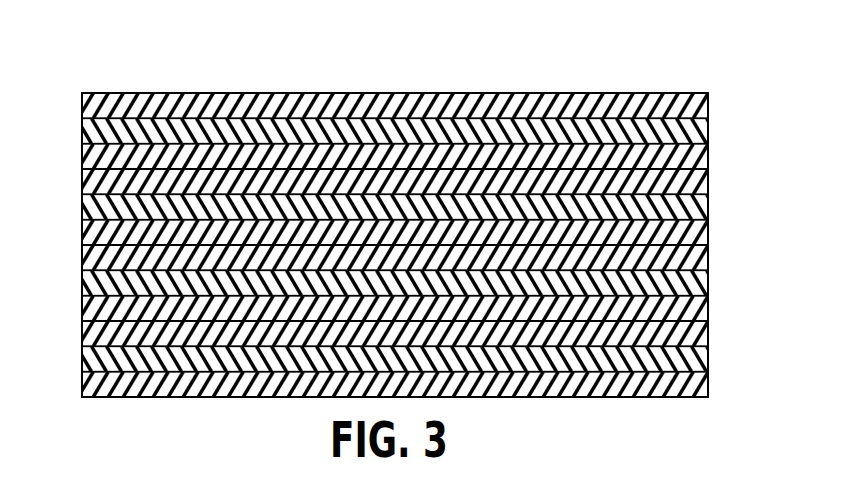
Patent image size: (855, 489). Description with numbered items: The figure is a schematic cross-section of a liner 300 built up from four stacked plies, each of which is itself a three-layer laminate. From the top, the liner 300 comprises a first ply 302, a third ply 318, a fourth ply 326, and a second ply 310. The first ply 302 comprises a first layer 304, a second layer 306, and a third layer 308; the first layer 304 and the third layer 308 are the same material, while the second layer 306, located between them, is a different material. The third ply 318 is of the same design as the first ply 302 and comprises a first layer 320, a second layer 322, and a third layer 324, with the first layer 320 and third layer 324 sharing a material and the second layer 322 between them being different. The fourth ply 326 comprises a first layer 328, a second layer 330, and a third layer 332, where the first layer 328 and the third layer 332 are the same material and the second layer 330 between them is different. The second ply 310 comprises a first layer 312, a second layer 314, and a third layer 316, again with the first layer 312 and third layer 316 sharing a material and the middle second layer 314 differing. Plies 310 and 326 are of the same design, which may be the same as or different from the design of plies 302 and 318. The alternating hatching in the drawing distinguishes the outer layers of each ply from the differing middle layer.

The liner 300 is at (456, 72).
The first ply 302 is at (80, 93).
The first layer 304 is at (708, 106).
The second layer 306 is at (708, 131).
The third layer 308 is at (708, 156).
The second ply 310 is at (80, 321).
The first layer 312 is at (708, 334).
The second layer 314 is at (708, 359).
The third layer 316 is at (708, 384).
The third ply 318 is at (80, 169).
The first layer 320 is at (708, 182).
The second layer 322 is at (708, 207).
The third layer 324 is at (708, 232).
The fourth ply 326 is at (80, 245).
The first layer 328 is at (708, 258).
The second layer 330 is at (708, 283).
The third layer 332 is at (708, 308).